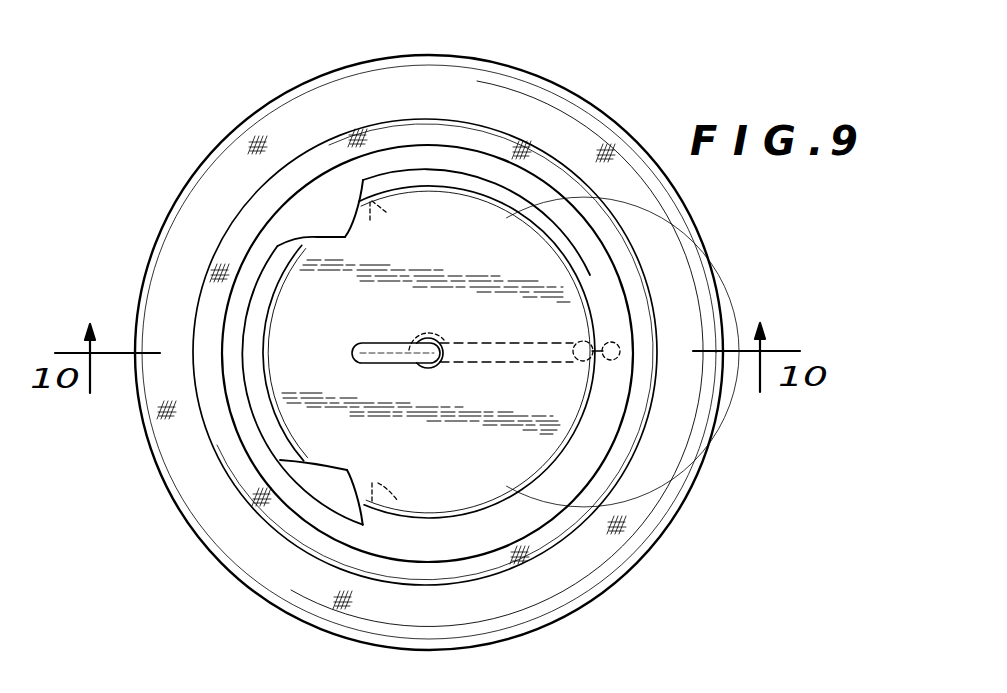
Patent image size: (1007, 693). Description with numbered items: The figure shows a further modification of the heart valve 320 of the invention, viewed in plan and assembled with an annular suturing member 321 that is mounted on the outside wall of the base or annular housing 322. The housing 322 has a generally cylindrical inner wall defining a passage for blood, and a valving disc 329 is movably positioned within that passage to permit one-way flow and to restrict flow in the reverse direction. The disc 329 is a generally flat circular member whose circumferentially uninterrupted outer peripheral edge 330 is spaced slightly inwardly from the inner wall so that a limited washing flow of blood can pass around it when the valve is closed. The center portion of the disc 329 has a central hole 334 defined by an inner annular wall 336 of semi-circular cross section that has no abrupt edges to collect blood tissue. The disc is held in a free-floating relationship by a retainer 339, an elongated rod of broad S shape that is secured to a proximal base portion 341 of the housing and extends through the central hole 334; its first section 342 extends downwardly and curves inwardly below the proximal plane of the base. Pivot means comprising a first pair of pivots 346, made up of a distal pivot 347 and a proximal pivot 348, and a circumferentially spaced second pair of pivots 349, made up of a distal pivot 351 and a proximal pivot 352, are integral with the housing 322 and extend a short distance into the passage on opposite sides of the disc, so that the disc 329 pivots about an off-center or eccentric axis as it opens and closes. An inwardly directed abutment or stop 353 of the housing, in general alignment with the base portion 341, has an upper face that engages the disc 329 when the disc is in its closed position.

The heart valve 320 is at (623, 115).
The annular suturing member 321 is at (613, 552).
The base or annular housing 322 is at (634, 471).
The valving disc 329 is at (499, 240).
The outer peripheral edge 330 is at (563, 423).
The central hole 334 is at (433, 342).
The inner annular wall 336 is at (423, 364).
The retainer 339 is at (538, 365).
The proximal base portion 341 is at (383, 346).
The first section 342 is at (352, 352).
The first pair of pivots 346 is at (360, 240).
The distal pivot 347 is at (337, 225).
The proximal pivot 348 is at (387, 203).
The second pair of pivots 349 is at (353, 455).
The distal pivot 351 is at (340, 485).
The proximal pivot 352 is at (388, 493).
The abutment or stop 353 is at (577, 360).